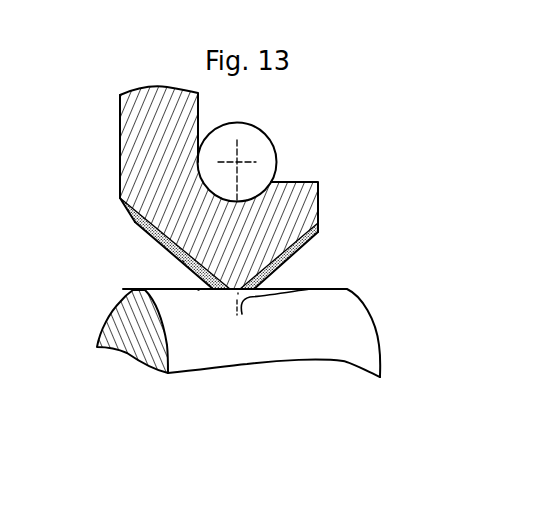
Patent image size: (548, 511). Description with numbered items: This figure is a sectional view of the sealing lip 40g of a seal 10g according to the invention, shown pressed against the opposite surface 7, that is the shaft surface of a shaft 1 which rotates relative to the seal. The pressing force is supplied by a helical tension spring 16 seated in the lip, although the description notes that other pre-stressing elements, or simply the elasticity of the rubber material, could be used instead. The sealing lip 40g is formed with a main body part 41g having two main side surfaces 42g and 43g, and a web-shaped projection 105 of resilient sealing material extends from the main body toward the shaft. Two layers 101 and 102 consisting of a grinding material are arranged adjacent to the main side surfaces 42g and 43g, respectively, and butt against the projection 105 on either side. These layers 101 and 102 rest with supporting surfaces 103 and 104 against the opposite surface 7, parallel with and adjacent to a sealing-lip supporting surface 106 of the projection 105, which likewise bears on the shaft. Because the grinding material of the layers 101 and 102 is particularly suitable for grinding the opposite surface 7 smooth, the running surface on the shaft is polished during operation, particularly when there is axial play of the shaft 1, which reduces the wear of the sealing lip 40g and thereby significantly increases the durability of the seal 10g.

The seal 10g is at (116, 142).
The helical tension spring 16 is at (262, 155).
The sealing lip 40g is at (135, 223).
The main body part 41g is at (313, 200).
The main side surface 42g is at (158, 238).
The main side surface 43g is at (292, 266).
The layer of grinding material 101 is at (183, 261).
The layer of grinding material 102 is at (273, 289).
The supporting surface 103 is at (198, 290).
The supporting surface 104 is at (310, 289).
The opposite surface 7 is at (163, 291).
The shaft 1 is at (178, 335).
The web-shaped projection 105 is at (231, 292).
The sealing-lip supporting surface 106 is at (238, 293).